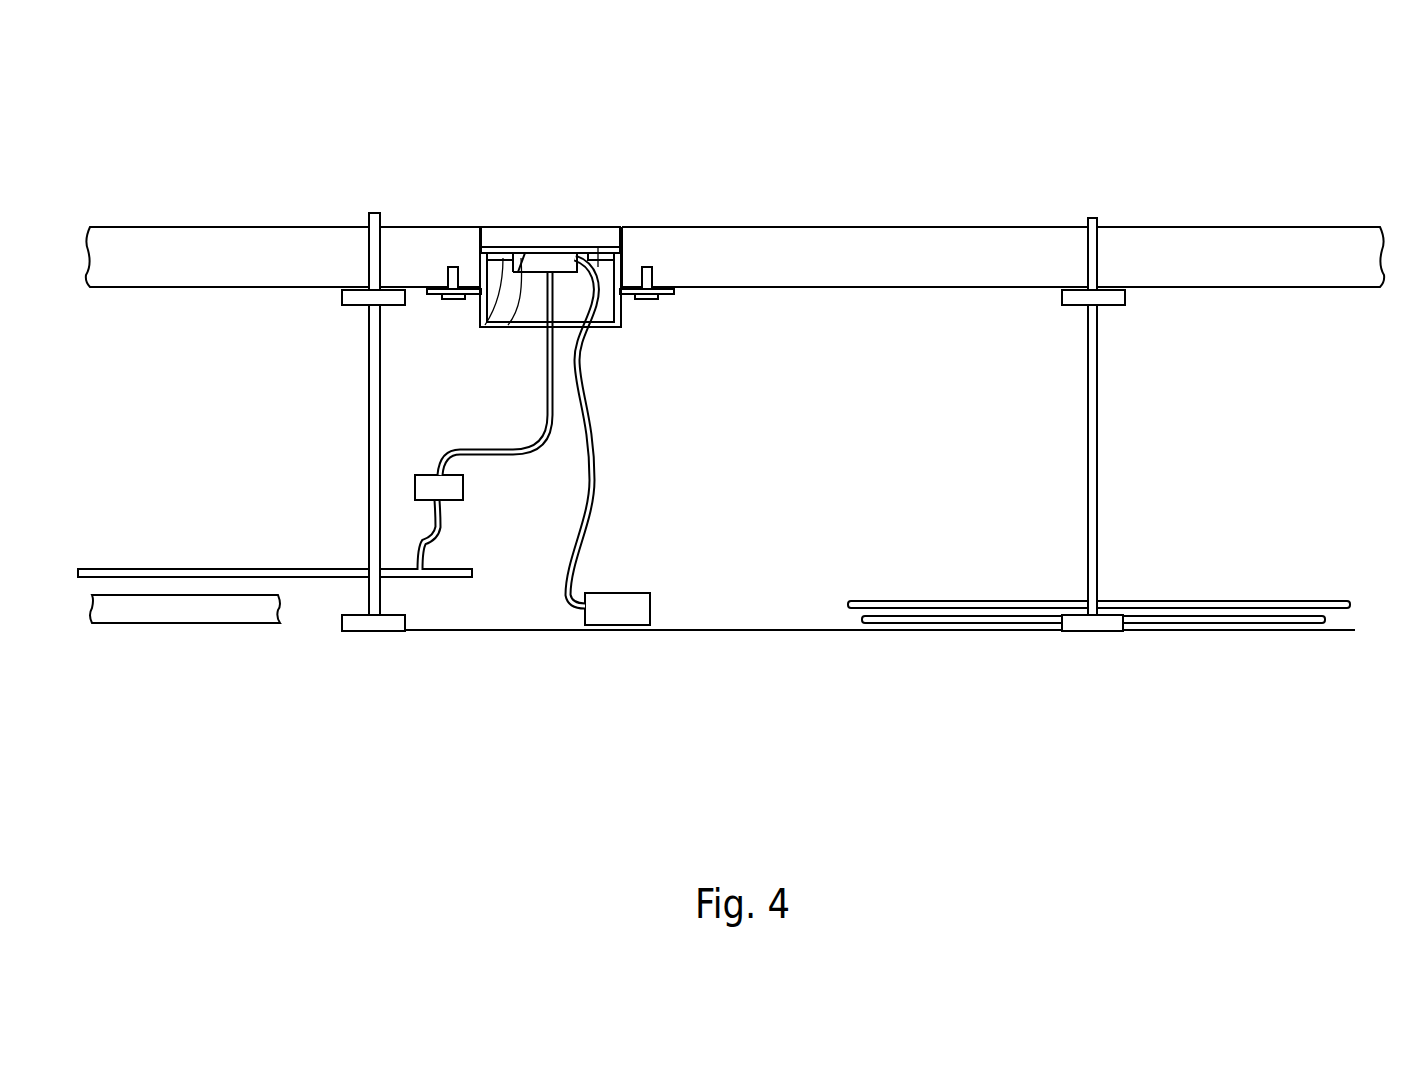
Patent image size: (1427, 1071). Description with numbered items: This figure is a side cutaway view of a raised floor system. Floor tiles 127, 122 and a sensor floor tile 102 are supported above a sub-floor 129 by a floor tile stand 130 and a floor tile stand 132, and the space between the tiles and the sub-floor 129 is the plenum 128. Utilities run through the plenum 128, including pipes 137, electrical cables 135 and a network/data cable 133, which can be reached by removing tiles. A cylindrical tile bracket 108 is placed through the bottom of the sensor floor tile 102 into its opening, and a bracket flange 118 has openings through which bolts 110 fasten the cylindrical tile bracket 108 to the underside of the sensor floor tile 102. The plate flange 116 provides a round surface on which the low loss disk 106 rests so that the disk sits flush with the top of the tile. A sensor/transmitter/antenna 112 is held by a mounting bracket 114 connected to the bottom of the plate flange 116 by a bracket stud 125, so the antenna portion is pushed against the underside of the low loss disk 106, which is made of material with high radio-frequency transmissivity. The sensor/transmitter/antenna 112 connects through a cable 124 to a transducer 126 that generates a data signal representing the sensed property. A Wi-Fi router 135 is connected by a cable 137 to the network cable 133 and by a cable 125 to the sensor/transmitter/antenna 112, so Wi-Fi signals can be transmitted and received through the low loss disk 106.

The sensor floor tile 102 is at (1002, 78).
The low loss disk 106 is at (501, 236).
The cylindrical tile bracket 108 is at (622, 316).
The bolts 110 is at (714, 262).
The sensor/transmitter/antenna 112 is at (566, 262).
The mounting bracket 114 is at (482, 332).
The plate flange 116 is at (617, 243).
The bracket flange 118 is at (672, 293).
The floor tile 122 is at (1290, 226).
The cable 124 is at (594, 417).
The bracket stud 125 is at (547, 358).
The transducer 126 is at (635, 608).
The floor tile 127 is at (207, 226).
The plenum 128 is at (988, 493).
The sub-floor 129 is at (895, 632).
The floor tile stand 130 is at (369, 413).
The floor tile stand 132 is at (1097, 437).
The network/data cable 133 is at (190, 548).
The electrical cables 135 is at (183, 608).
The pipes 137 is at (1167, 587).